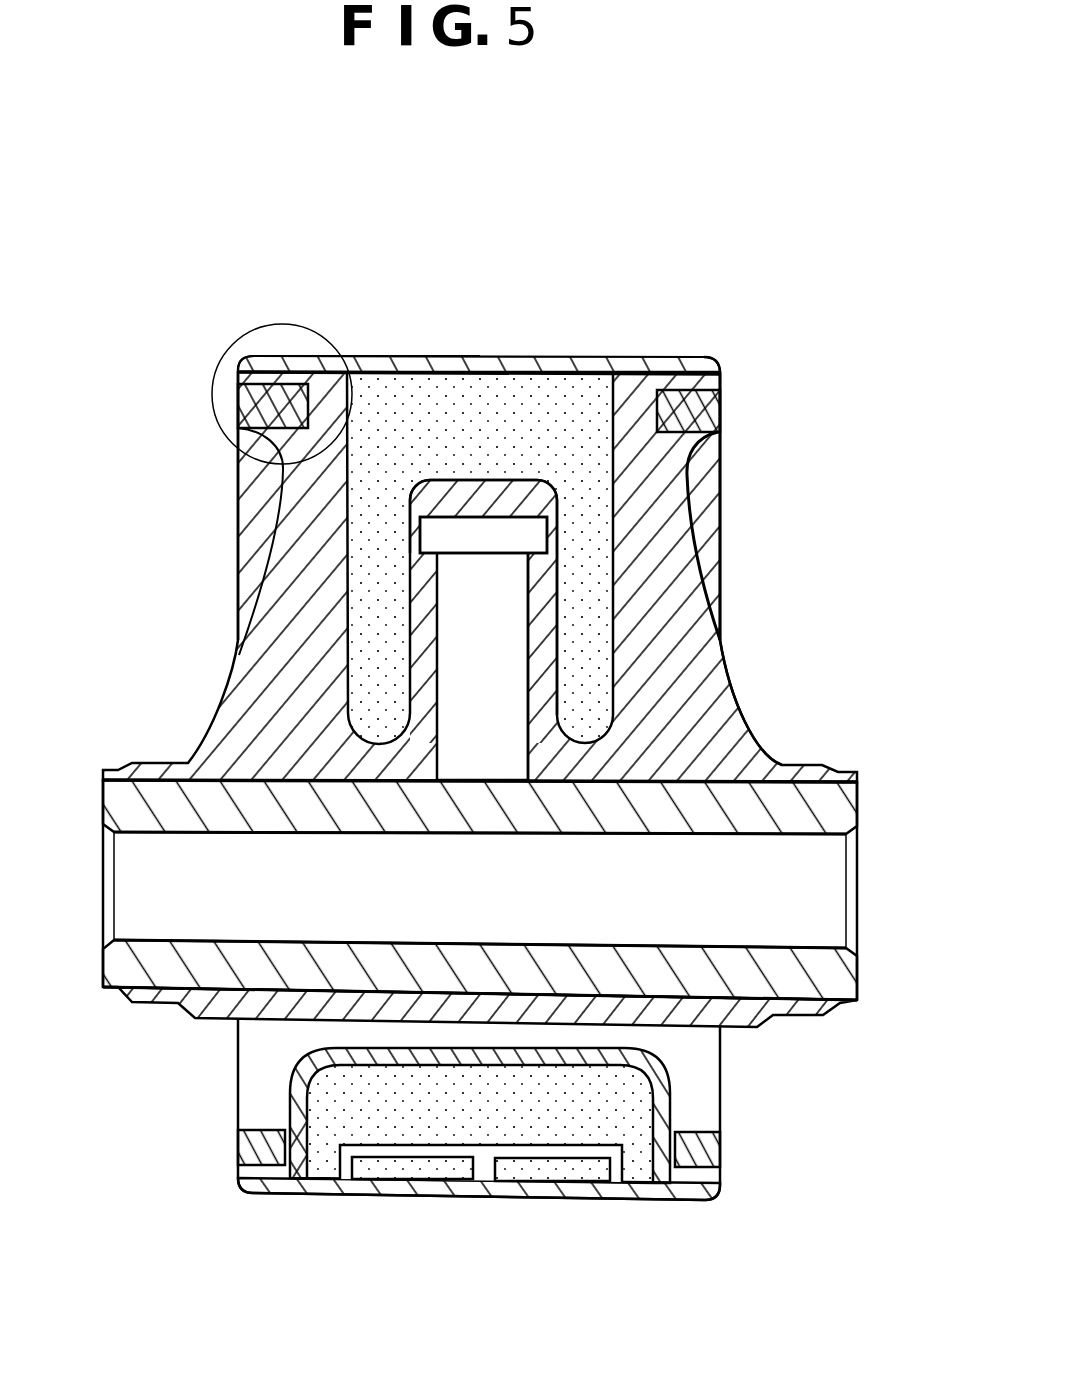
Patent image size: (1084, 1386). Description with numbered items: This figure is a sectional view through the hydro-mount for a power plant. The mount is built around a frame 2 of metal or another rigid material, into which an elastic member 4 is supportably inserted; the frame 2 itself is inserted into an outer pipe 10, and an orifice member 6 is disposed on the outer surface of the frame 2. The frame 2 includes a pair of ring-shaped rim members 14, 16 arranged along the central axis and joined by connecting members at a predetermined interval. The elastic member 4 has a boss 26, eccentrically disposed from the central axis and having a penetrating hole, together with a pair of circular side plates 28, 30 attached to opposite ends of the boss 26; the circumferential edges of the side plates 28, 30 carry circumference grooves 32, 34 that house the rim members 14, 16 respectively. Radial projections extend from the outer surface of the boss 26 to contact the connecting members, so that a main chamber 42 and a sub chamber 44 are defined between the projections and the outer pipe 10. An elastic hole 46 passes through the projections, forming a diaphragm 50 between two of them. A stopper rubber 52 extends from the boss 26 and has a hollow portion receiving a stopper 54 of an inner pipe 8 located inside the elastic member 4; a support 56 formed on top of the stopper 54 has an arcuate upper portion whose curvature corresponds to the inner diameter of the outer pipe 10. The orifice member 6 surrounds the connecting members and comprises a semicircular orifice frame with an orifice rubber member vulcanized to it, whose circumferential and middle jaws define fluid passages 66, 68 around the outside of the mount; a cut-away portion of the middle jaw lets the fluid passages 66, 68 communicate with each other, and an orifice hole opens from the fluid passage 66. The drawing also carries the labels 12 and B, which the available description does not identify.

The frame 2 is at (875, 528).
The elastic member 4 is at (384, 1176).
The orifice member 6 is at (787, 790).
The inner pipe 8 is at (655, 366).
The outer pipe 10 is at (738, 535).
The side wall 12 is at (704, 648).
The rim member 14 is at (284, 367).
The rim member 16 is at (717, 365).
The boss 26 is at (237, 1019).
The side plate 28 is at (307, 522).
The side plate 30 is at (667, 507).
The circumference groove 32 is at (267, 402).
The circumference groove 34 is at (688, 428).
The main chamber 42 is at (397, 400).
The sub chamber 44 is at (335, 1100).
The elastic hole 46 is at (628, 1037).
The diaphragm 50 is at (348, 1037).
The stopper rubber 52 is at (483, 493).
The stopper 54 is at (510, 587).
The support 56 is at (517, 535).
The fluid passage 66 is at (440, 1165).
The fluid passage 68 is at (553, 1165).
The detail circle B is at (217, 358).